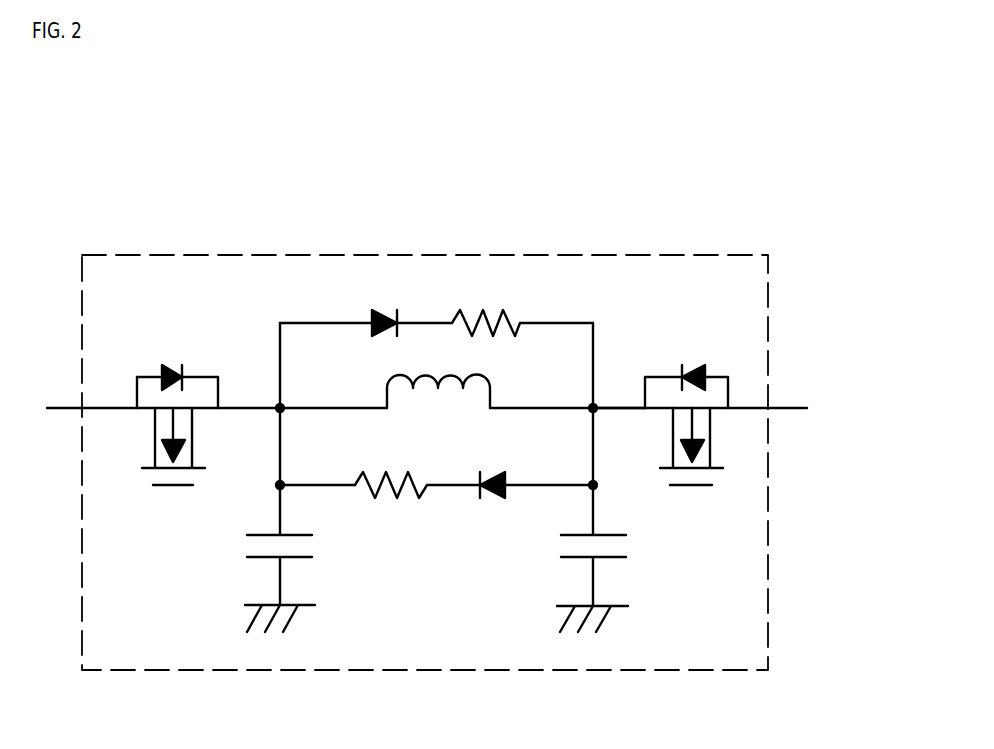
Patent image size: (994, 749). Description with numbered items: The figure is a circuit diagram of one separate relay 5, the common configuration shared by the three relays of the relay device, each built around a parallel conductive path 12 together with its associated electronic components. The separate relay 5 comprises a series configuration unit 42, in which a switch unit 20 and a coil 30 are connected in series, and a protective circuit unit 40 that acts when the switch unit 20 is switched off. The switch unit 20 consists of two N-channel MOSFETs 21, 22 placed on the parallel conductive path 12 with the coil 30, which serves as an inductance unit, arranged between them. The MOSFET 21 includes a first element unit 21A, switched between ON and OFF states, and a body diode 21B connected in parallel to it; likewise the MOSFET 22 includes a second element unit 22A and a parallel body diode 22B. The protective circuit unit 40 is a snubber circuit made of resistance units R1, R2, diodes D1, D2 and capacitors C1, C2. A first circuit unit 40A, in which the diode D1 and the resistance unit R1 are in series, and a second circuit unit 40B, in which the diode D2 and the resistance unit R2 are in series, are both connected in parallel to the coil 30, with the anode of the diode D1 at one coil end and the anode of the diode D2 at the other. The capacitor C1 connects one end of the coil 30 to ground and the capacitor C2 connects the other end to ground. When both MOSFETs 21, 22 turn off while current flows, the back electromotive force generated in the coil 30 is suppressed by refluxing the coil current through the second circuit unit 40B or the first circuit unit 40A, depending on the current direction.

The separate relay 5 is at (698, 255).
The parallel conductive path 12 is at (100, 408).
The switch unit 20 is at (460, 118).
The MOSFET 21 is at (195, 342).
The first element unit 21A is at (153, 440).
The body diode 21B is at (170, 365).
The MOSFET 22 is at (642, 310).
The second element unit 22A is at (757, 456).
The body diode 22B is at (695, 365).
The coil 30 is at (395, 379).
The protective circuit unit 40 is at (225, 520).
The first circuit unit 40A is at (436, 257).
The second circuit unit 40B is at (436, 488).
The series configuration unit 42 is at (648, 455).
The diode D1 is at (383, 312).
The diode D2 is at (494, 497).
The resistance unit R1 is at (505, 317).
The resistance unit R2 is at (415, 498).
The capacitor C1 is at (300, 557).
The capacitor C2 is at (572, 557).